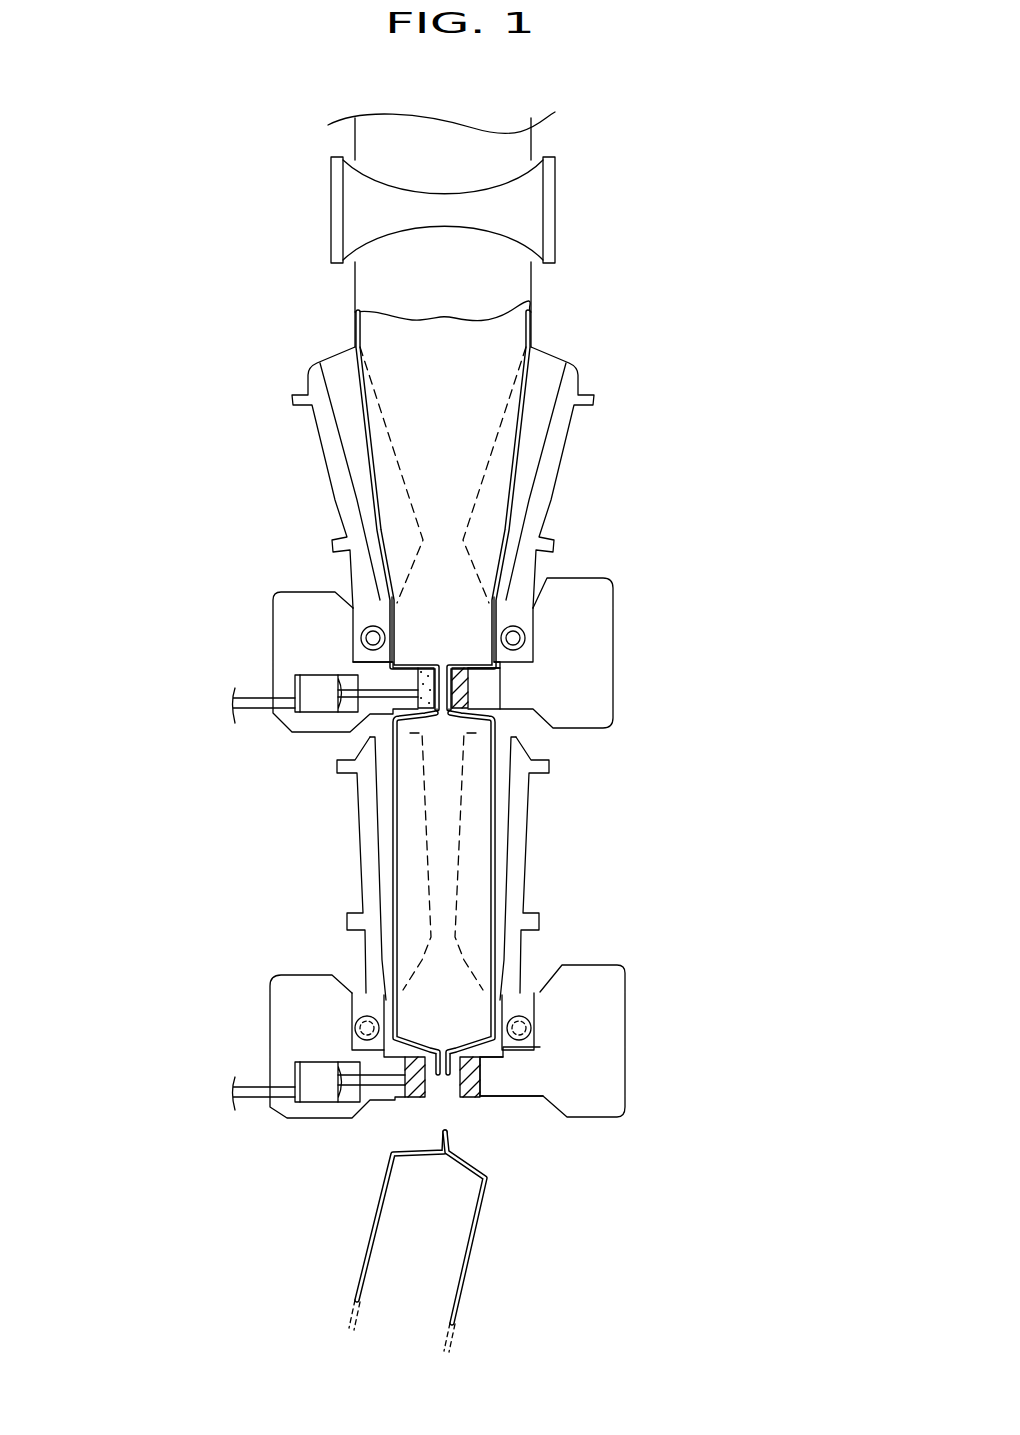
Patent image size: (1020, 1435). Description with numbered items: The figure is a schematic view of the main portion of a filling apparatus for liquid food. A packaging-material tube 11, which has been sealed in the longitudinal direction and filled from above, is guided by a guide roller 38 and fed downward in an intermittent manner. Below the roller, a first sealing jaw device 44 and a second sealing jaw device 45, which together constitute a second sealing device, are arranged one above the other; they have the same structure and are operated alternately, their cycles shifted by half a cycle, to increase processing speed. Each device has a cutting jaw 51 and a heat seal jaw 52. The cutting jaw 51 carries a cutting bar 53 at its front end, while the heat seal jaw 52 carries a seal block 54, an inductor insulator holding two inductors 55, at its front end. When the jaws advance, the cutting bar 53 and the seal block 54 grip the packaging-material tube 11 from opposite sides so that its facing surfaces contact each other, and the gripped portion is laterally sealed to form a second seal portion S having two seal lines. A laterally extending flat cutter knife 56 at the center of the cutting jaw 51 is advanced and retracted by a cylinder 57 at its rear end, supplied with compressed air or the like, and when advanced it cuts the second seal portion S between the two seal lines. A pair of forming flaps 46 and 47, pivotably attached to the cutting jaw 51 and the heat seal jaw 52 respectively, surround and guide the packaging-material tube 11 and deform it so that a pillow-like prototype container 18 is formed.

The packaging-material tube 11 is at (518, 285).
The guide roller 38 is at (557, 197).
The first sealing jaw device 44 is at (627, 572).
The second sealing jaw device 45 is at (630, 953).
The forming flap 46 is at (317, 363).
The forming flap 47 is at (569, 365).
The cutting jaw 51 is at (266, 613).
The heat seal jaw 52 is at (621, 613).
The cutting bar 53 is at (426, 668).
The seal block 54 is at (520, 700).
The inductor 55 is at (468, 692).
The cutter knife 56 is at (387, 690).
The cylinder 57 is at (320, 673).
The second seal portion S is at (443, 662).
The prototype container 18 is at (497, 897).